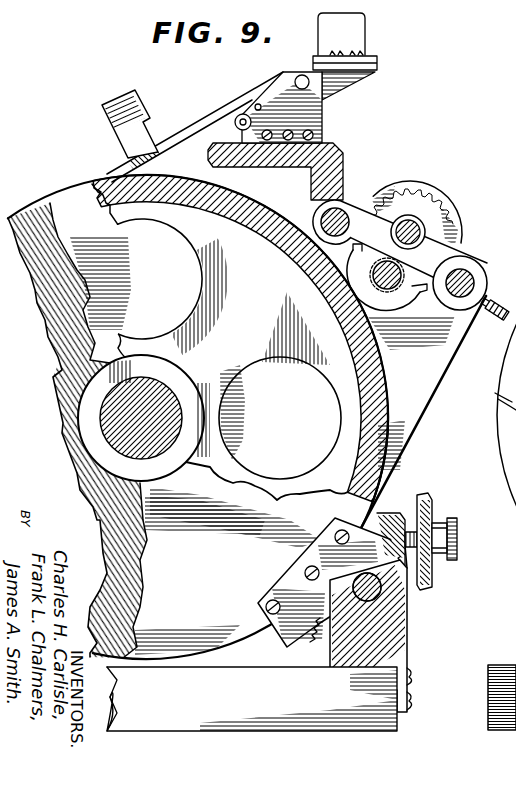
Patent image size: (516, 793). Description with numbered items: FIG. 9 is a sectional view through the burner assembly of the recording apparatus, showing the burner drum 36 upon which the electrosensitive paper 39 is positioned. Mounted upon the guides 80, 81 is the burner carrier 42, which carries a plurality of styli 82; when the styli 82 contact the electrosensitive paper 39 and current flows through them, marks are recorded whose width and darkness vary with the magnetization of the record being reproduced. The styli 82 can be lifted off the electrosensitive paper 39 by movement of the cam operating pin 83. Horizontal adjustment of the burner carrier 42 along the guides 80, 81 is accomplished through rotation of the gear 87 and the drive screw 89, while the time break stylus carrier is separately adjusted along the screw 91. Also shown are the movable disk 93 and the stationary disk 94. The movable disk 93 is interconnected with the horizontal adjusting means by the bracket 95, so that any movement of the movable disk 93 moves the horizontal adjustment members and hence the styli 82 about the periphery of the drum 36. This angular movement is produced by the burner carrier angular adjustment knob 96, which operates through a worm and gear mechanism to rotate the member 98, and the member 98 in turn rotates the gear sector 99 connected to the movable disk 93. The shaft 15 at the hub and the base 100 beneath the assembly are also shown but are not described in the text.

The shaft 15 is at (164, 402).
The burner drum 36 is at (377, 427).
The electrosensitive paper 39 is at (240, 195).
The burner carrier 42 is at (343, 163).
The guide 80 is at (481, 272).
The guide 81 is at (323, 214).
The stylus 82 is at (93, 183).
The cam operating pin 83 is at (206, 147).
The gear 87 is at (418, 196).
The drive screw 89 is at (391, 288).
The screw 91 is at (412, 235).
The movable disk 93 is at (208, 597).
The stationary disk 94 is at (122, 596).
The bracket 95 is at (433, 371).
The burner carrier angular adjustment knob 96 is at (457, 533).
The member 98 is at (377, 597).
The gear sector 99 is at (298, 588).
The base 100 is at (382, 676).